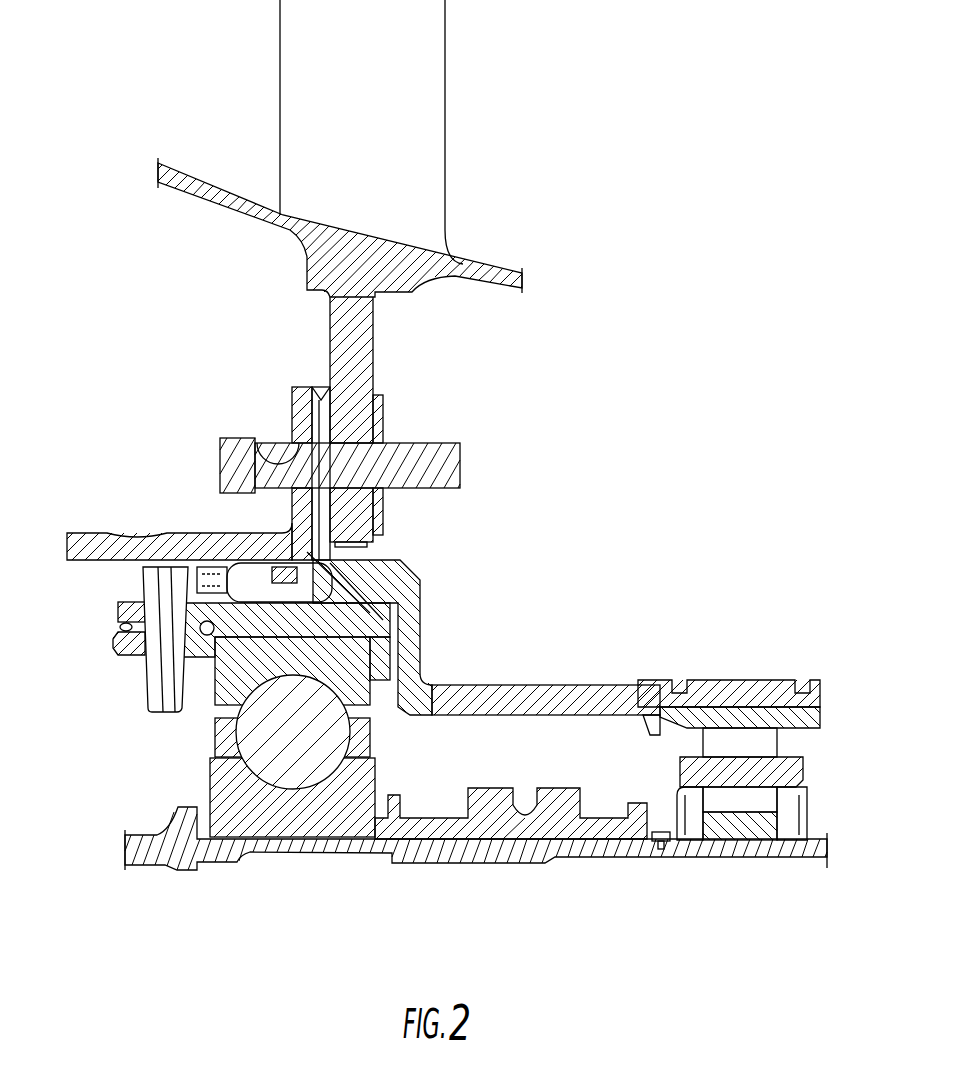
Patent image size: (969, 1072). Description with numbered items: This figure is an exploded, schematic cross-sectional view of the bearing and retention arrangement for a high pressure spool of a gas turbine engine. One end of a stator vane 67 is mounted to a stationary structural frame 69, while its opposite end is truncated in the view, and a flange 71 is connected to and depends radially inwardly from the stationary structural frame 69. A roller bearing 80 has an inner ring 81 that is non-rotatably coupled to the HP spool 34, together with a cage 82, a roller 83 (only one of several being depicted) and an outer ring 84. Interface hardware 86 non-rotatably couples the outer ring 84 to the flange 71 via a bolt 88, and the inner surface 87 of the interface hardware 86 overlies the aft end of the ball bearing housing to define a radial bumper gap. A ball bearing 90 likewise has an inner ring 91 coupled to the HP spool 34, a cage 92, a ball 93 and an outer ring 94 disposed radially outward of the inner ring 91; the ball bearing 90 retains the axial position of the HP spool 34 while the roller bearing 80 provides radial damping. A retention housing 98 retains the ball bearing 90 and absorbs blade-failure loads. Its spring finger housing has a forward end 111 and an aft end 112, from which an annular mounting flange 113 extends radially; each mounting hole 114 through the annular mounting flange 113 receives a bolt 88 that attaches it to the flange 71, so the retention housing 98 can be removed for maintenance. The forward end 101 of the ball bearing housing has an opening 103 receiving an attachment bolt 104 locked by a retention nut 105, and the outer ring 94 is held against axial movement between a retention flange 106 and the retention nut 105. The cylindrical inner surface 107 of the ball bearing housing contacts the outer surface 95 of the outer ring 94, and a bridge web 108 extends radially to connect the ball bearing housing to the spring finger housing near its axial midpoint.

The HP spool 34 is at (465, 860).
The stator vane 67 is at (430, 165).
The stationary structural frame 69 is at (490, 277).
The flange 71 is at (365, 358).
The roller bearing 80 is at (706, 821).
The inner ring 81 is at (800, 815).
The cage 82 is at (800, 775).
The roller 83 is at (737, 803).
The outer ring 84 is at (815, 712).
The interface hardware 86 is at (477, 697).
The inner surface 87 is at (372, 608).
The bolt 88 is at (410, 455).
The ball bearing 90 is at (292, 733).
The inner ring 91 is at (372, 787).
The cage 92 is at (227, 760).
The ball 93 is at (223, 735).
The outer ring 94 is at (223, 690).
The outer surface 95 is at (297, 630).
The retention housing 98 is at (193, 571).
The forward end 101 is at (123, 603).
The opening 103 is at (150, 612).
The retention nut 105 is at (120, 645).
The attachment bolt 104 is at (153, 686).
The retention flange 106 is at (381, 657).
The inner surface 107 is at (372, 607).
The bridge web 108 is at (230, 577).
The forward end 111 is at (50, 540).
The aft end 112 is at (263, 515).
The annular mounting flange 113 is at (297, 405).
The mounting hole 114 is at (262, 462).